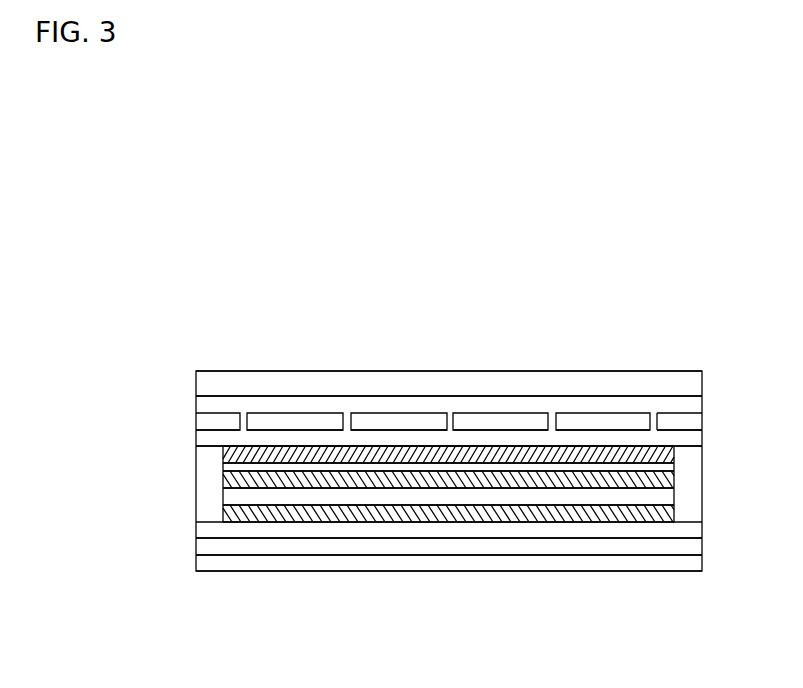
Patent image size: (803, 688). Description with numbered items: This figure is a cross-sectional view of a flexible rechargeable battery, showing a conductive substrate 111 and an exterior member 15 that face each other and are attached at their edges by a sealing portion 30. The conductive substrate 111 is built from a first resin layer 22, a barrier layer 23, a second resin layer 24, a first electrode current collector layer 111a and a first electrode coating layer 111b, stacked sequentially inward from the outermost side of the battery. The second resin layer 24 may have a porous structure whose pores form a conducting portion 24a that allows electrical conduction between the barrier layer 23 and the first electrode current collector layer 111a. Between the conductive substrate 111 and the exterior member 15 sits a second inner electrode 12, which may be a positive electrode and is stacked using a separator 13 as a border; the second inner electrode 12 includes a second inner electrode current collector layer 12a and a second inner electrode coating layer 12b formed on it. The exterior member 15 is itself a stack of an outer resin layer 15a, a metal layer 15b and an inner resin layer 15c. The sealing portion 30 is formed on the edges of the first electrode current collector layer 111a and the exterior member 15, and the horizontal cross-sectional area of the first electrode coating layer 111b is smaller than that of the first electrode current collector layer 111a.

The conductive substrate 111 is at (78, 333).
The first resin layer 22 is at (207, 383).
The barrier layer 23 is at (207, 405).
The second resin layer 24 is at (422, 413).
The conducting portion 24a is at (660, 417).
The first electrode current collector layer 111a is at (210, 440).
The first electrode coating layer 111b is at (222, 457).
The sealing portion 30 is at (207, 490).
The separator 13 is at (662, 467).
The second inner electrode 12 is at (448, 567).
The second inner electrode current collector layer 12a is at (629, 497).
The second inner electrode coating layer 12b is at (547, 521).
The exterior member 15 is at (78, 503).
The outer resin layer 15a is at (207, 563).
The metal layer 15b is at (207, 547).
The inner resin layer 15c is at (207, 531).